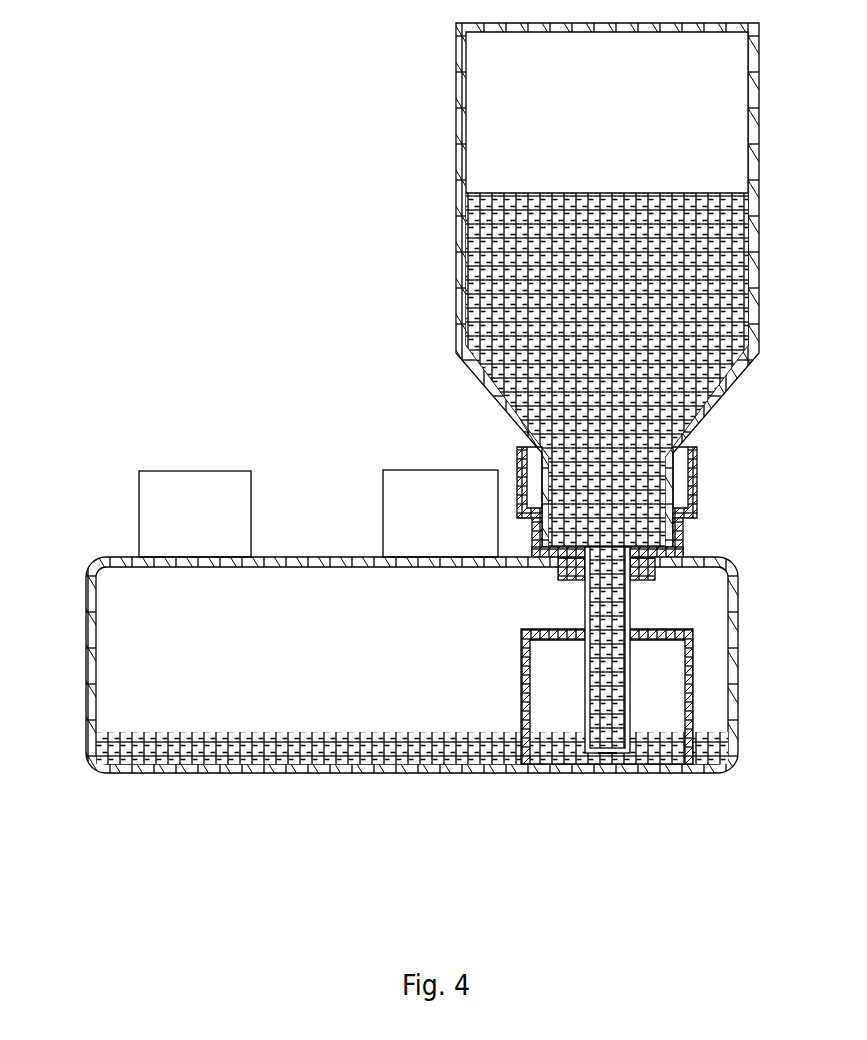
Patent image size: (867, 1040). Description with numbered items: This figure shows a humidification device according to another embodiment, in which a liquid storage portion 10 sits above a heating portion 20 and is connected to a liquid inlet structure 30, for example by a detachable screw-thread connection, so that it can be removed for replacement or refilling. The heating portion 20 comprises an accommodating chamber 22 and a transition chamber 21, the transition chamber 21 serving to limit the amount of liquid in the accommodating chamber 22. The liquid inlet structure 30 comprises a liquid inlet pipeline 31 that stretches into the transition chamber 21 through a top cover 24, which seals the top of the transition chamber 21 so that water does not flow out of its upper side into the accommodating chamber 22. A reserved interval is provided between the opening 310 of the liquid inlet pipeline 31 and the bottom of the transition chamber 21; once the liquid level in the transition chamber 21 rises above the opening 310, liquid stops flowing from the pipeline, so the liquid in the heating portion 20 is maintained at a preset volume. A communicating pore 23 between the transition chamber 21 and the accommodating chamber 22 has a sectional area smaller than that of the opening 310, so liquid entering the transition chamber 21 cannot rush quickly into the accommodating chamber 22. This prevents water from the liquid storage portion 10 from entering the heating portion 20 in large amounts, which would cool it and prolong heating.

The liquid storage portion 10 is at (725, 102).
The heating portion 20 is at (435, 661).
The transition chamber 21 is at (543, 698).
The accommodating chamber 22 is at (120, 612).
The communicating pore 23 is at (687, 750).
The top cover 24 is at (665, 635).
The liquid inlet structure 30 is at (693, 482).
The liquid inlet pipeline 31 is at (702, 700).
The opening 310 is at (587, 728).